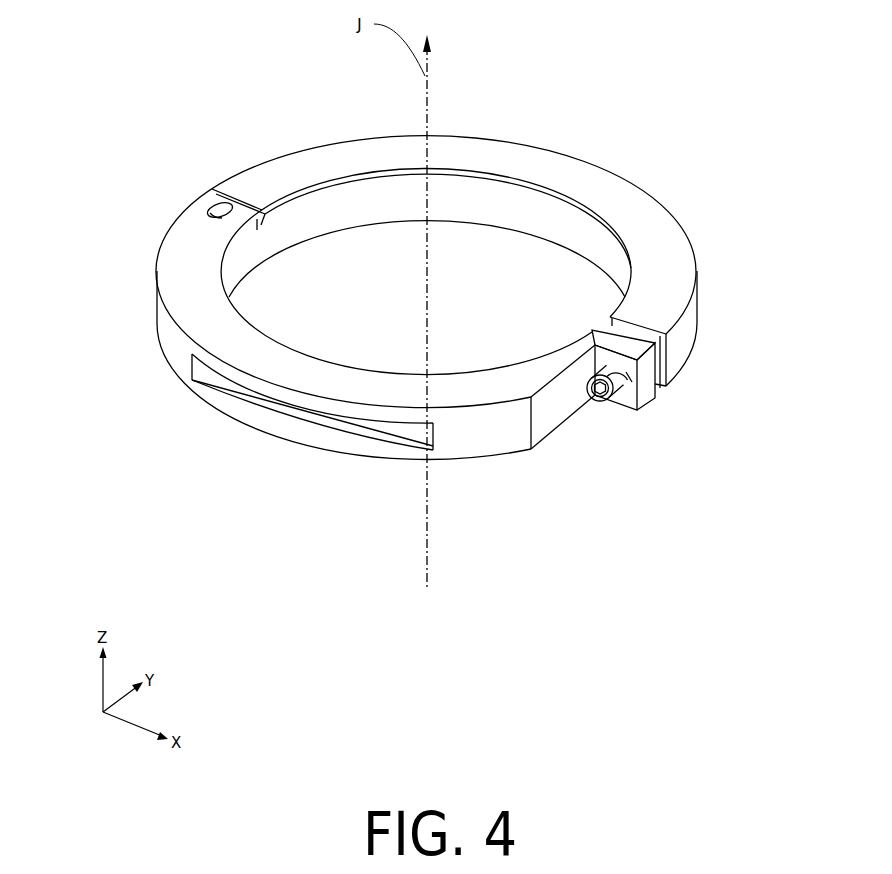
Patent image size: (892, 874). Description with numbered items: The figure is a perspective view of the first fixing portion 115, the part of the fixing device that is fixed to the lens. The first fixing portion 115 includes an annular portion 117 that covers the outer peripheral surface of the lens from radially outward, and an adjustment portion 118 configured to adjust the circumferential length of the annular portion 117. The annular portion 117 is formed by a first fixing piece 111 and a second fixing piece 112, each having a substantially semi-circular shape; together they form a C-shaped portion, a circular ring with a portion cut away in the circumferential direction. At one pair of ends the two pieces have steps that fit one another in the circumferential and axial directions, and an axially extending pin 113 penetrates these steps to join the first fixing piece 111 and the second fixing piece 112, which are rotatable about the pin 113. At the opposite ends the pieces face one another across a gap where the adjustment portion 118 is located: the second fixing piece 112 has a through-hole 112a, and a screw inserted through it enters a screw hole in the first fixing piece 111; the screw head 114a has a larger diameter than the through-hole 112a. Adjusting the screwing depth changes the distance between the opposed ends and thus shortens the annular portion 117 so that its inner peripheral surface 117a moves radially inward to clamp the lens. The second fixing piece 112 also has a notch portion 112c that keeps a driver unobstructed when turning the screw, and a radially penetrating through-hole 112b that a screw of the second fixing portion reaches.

The first fixing piece 111 is at (630, 207).
The second fixing piece 112 is at (488, 437).
The through-hole 112a is at (652, 392).
The through-hole 112b is at (290, 425).
The notch portion 112c is at (553, 408).
The pin 113 is at (207, 211).
The screw head 114a is at (601, 405).
The first fixing portion 115 is at (542, 141).
The annular portion 117 is at (289, 154).
The inner peripheral surface 117a is at (486, 201).
The adjustment portion 118 is at (662, 412).